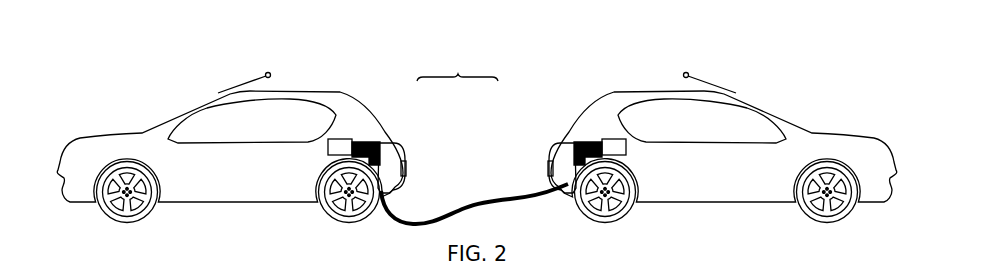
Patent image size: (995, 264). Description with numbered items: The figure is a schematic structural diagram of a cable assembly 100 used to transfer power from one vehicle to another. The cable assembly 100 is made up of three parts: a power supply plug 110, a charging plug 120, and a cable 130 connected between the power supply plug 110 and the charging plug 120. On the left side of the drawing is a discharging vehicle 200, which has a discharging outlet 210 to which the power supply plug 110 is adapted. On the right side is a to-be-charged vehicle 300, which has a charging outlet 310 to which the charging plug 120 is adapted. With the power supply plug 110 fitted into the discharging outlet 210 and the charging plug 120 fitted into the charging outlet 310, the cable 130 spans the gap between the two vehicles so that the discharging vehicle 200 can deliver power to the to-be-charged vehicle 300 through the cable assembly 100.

The cable assembly 100 is at (457, 65).
The power supply plug 110 is at (384, 141).
The charging plug 120 is at (574, 141).
The cable 130 is at (478, 203).
The discharging vehicle 200 is at (147, 142).
The discharging outlet 210 is at (340, 148).
The to-be-charged vehicle 300 is at (801, 136).
The charging outlet 310 is at (617, 143).